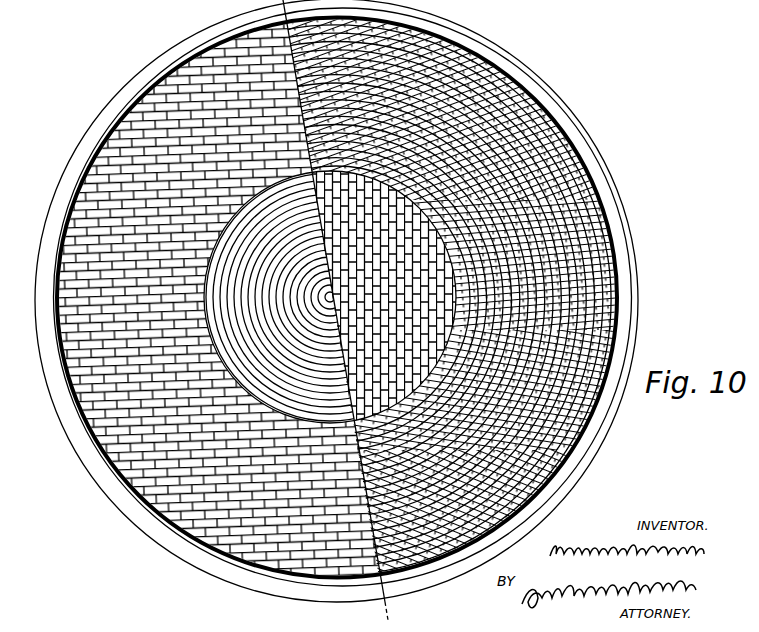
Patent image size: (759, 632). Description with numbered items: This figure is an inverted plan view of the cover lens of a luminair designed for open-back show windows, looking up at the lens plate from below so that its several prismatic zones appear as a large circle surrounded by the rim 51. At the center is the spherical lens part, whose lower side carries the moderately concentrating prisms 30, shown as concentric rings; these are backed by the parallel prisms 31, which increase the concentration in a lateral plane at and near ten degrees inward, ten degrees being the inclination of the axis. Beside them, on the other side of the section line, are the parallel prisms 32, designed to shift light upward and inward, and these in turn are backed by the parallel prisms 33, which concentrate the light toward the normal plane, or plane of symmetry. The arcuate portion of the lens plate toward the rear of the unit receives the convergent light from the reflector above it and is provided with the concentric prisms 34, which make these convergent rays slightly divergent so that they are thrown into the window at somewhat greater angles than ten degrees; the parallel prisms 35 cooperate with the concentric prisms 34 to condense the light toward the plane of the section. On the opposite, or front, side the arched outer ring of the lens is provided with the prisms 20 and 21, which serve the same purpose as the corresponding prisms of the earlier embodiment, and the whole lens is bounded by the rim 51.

The rim ring 51 is at (133, 107).
The prisms 20 is at (205, 160).
The prisms 21 is at (215, 434).
The concentric prisms 34 is at (407, 108).
The parallel prisms 35 is at (453, 305).
The parallel prisms 33 is at (380, 232).
The parallel prisms 32 is at (380, 362).
The parallel prisms 31 is at (330, 297).
The prisms 30 is at (344, 352).